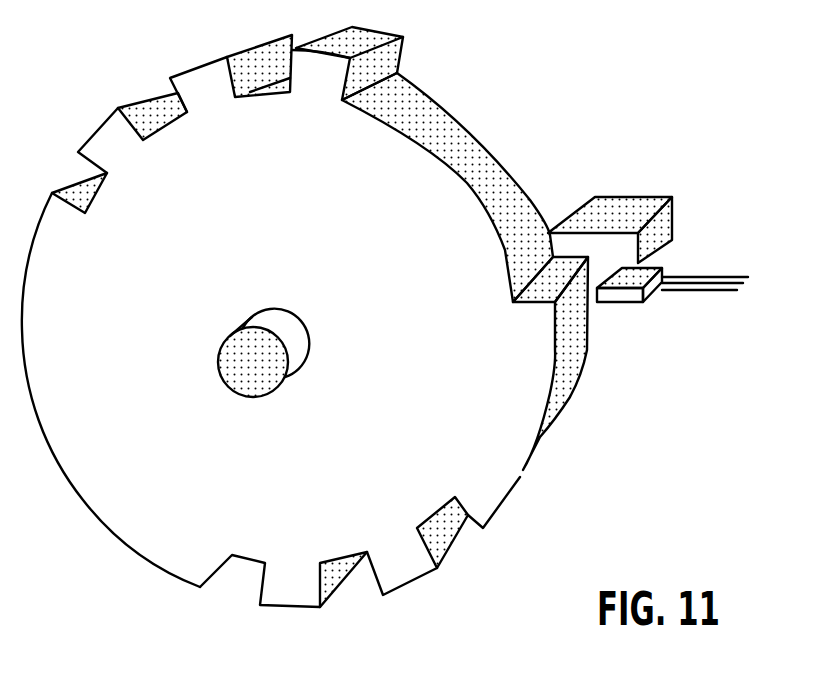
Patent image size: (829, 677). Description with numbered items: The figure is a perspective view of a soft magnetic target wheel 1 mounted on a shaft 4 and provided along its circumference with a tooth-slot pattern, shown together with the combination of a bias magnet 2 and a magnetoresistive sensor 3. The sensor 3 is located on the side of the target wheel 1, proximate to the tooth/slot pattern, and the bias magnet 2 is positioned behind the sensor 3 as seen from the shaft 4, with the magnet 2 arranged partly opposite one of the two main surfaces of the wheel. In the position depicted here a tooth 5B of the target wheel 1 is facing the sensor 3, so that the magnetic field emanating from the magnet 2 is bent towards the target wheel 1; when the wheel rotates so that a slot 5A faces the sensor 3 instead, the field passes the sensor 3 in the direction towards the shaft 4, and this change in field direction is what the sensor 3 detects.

The target wheel 1 is at (480, 463).
The bias magnet 2 is at (617, 210).
The magnetoresistive sensor 3 is at (637, 282).
The shaft 4 is at (255, 362).
The slot 5A is at (487, 160).
The tooth 5B is at (573, 355).